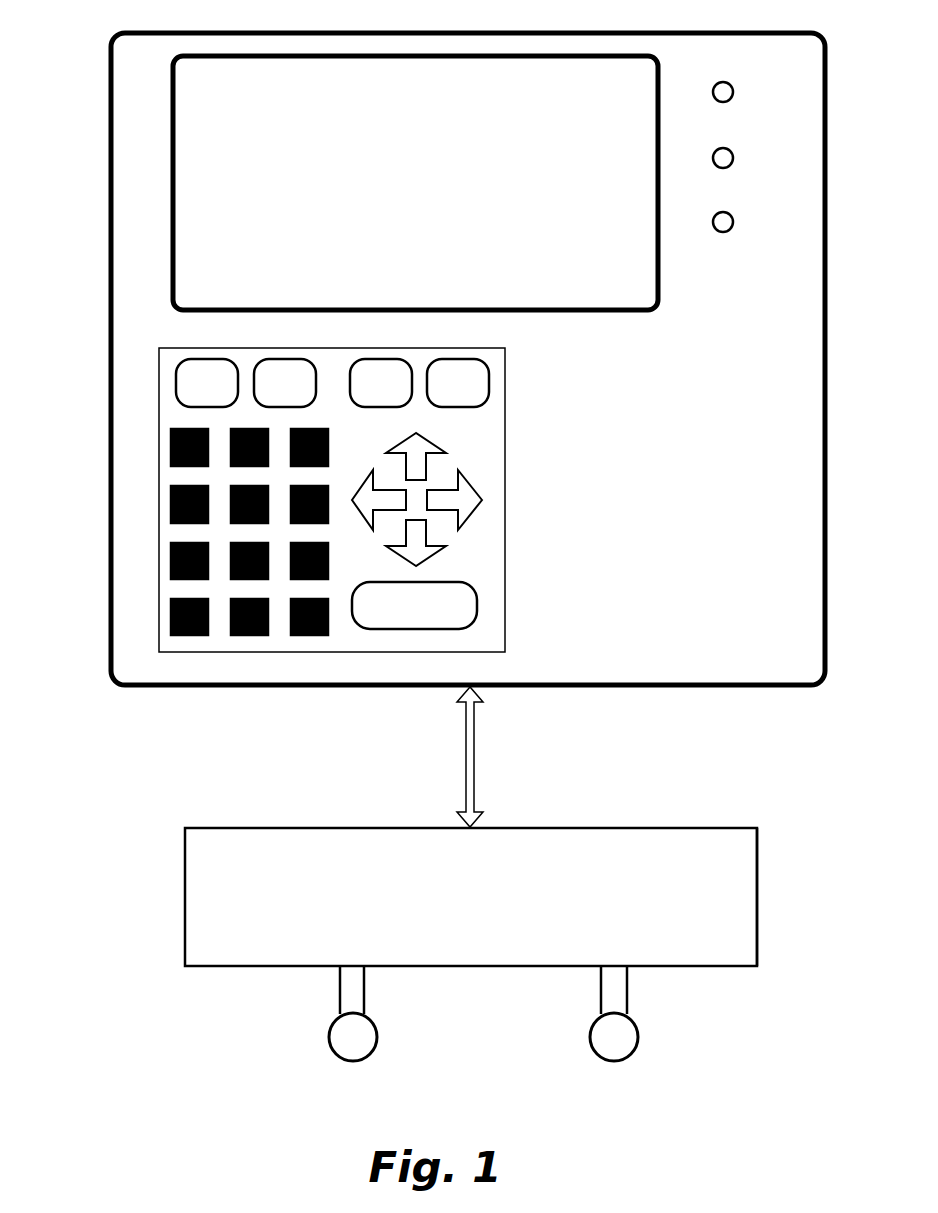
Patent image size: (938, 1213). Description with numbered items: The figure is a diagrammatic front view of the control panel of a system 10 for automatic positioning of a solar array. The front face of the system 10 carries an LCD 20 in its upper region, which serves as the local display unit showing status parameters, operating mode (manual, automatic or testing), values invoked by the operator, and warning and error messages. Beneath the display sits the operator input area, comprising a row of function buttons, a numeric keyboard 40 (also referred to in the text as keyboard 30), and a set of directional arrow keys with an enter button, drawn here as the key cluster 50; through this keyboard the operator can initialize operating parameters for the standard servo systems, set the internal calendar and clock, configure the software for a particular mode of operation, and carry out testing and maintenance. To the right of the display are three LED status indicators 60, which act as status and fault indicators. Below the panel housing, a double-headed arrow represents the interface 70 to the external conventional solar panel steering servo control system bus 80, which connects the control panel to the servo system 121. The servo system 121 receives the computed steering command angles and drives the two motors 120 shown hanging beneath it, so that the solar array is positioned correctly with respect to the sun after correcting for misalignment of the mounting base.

The system 10 is at (110, 60).
The LCD 20 is at (172, 208).
The keyboard 30 is at (176, 383).
The keyboard 40 is at (171, 514).
The directional arrow keys and enter button 50 is at (476, 483).
The LED status indicators 60 is at (733, 158).
The interface 70 is at (335, 828).
The servo control system bus 80 is at (475, 767).
The motors 120 is at (590, 1038).
The servo system 121 is at (757, 897).